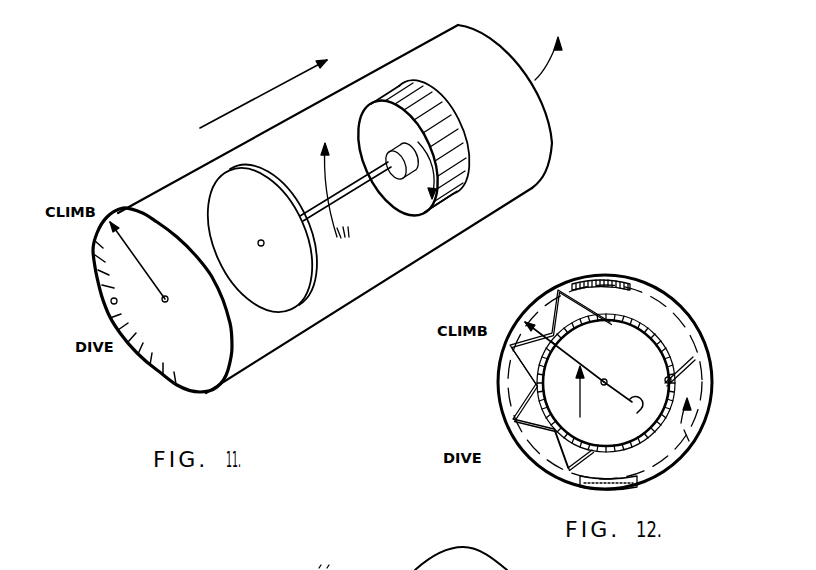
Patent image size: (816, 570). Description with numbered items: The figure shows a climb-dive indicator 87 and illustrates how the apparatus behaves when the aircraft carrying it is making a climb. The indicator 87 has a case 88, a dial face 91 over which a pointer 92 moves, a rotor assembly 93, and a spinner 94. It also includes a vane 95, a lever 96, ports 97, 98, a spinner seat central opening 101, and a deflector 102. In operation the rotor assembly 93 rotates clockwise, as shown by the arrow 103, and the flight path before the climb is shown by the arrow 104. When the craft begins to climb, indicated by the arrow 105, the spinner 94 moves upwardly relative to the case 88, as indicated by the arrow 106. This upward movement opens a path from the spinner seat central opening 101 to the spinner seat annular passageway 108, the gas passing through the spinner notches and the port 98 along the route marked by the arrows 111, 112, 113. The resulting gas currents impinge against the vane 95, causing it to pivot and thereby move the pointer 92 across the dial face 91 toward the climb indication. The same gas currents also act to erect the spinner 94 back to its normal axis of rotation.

In FIG. 11, the climb-dive indicator 87 is at (430, 260).
In FIG. 11, the case 88 is at (495, 214).
In FIG. 11, the dial face 91 is at (177, 375).
In FIG. 11, the pointer 92 is at (153, 281).
In FIG. 12, the pointer 92 is at (583, 365).
In FIG. 11, the rotor assembly 93 is at (447, 135).
In FIG. 11, the spinner 94 is at (260, 289).
In FIG. 12, the vane 95 is at (692, 366).
In FIG. 12, the lever 96 is at (626, 400).
In FIG. 12, the port 97 is at (576, 282).
In FIG. 12, the port 98 is at (588, 485).
In FIG. 12, the spinner seat central opening 101 is at (648, 442).
In FIG. 12, the deflector 102 is at (518, 367).
In FIG. 11, the arrow 103 is at (432, 177).
In FIG. 11, the arrow 104 is at (218, 120).
In FIG. 11, the arrow 105 is at (556, 60).
In FIG. 11, the arrow 106 is at (329, 184).
In FIG. 12, the arrow 106 is at (580, 410).
In FIG. 12, the spinner seat annular passageway 108 is at (678, 435).
In FIG. 12, the arrow 111 is at (608, 440).
In FIG. 12, the arrow 112 is at (612, 482).
In FIG. 12, the arrow 113 is at (688, 411).